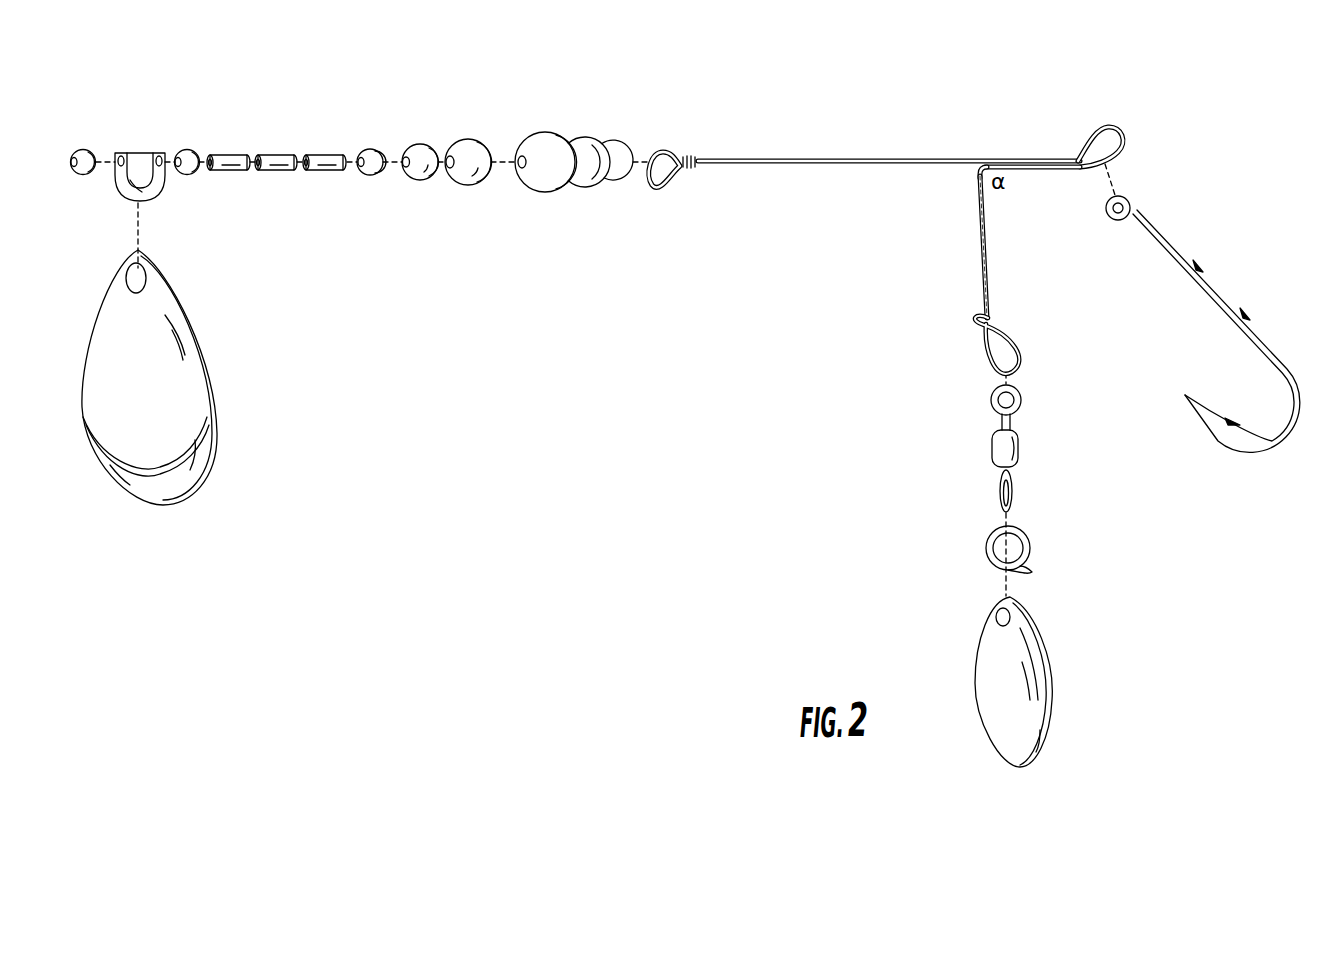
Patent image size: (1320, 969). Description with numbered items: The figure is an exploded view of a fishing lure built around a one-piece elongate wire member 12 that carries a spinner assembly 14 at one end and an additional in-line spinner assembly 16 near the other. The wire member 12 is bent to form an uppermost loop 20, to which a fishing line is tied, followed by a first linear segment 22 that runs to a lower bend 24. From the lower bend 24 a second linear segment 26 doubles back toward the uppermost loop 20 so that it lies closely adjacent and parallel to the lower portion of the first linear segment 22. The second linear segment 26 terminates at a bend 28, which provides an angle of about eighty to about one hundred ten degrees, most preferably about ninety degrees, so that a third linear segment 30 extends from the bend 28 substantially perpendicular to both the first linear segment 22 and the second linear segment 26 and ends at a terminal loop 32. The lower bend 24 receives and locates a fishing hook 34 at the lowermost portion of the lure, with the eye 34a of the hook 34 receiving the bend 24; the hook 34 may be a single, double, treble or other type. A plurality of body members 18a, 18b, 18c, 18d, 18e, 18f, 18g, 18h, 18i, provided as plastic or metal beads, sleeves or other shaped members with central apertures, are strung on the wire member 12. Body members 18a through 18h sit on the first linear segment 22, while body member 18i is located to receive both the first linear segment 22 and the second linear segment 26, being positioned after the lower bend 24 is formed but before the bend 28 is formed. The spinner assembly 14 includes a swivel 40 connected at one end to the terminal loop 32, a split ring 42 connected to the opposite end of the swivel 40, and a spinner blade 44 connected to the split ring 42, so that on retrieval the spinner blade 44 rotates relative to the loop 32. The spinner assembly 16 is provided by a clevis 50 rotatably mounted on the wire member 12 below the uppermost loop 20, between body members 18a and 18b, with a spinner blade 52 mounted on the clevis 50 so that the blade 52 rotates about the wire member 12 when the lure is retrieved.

The wire member 12 is at (800, 184).
The spinner assembly 14 is at (966, 508).
The spinner assembly 16 is at (180, 229).
The body member 18a is at (88, 150).
The body member 18b is at (192, 152).
The body member 18c is at (236, 155).
The body member 18d is at (284, 155).
The body member 18e is at (330, 155).
The body member 18f is at (368, 149).
The body member 18g is at (423, 144).
The body member 18h is at (473, 139).
The body member 18i is at (583, 140).
The uppermost loop 20 is at (662, 189).
The first linear segment 22 is at (900, 158).
The lower bend 24 is at (1114, 130).
The second linear segment 26 is at (1031, 170).
The bend 28 is at (975, 170).
The third linear segment 30 is at (980, 233).
The terminal loop 32 is at (985, 340).
The fishing hook 34 is at (1262, 455).
The eye 34a is at (1135, 200).
The swivel 40 is at (1022, 450).
The split ring 42 is at (1034, 552).
The spinner blade 44 is at (1040, 665).
The clevis 50 is at (117, 185).
The spinner blade 52 is at (182, 380).